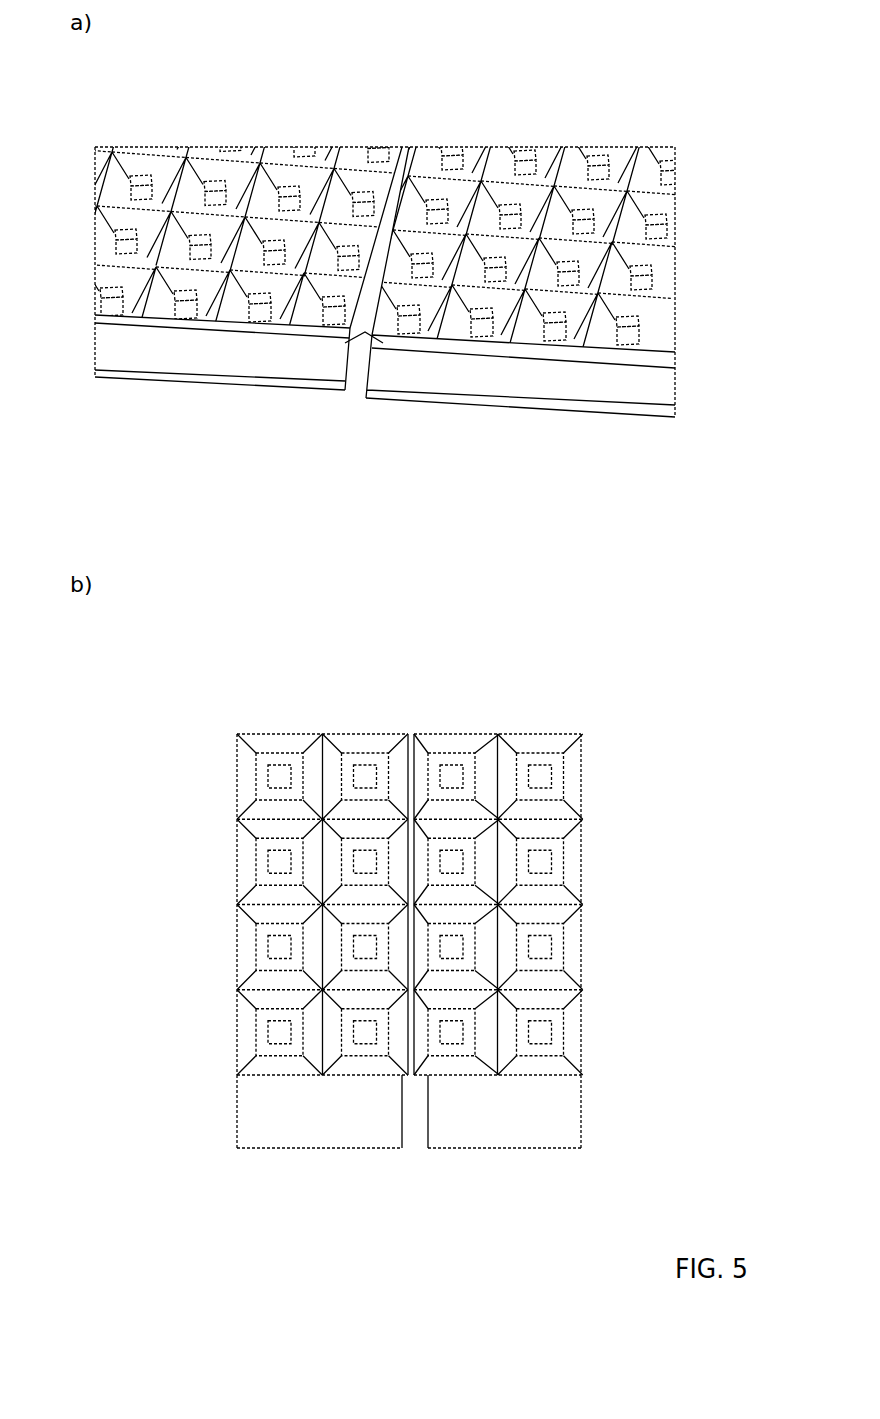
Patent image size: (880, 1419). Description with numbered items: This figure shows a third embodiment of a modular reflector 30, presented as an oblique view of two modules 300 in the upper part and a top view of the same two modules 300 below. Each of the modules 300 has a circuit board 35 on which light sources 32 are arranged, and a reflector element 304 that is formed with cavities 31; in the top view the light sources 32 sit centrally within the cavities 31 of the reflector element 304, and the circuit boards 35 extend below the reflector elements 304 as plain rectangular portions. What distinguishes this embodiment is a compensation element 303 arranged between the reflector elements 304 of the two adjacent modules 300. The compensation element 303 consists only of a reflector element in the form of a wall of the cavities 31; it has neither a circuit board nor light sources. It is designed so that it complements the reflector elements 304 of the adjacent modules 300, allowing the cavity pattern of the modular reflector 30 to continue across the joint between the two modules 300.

The modular reflector 30 is at (380, 108).
The cavities 31 is at (676, 266).
The light sources 32 is at (520, 158).
The compensation element 303 is at (358, 337).
The reflector element 304 is at (213, 152).
The circuit board 35 is at (176, 382).
The modules 300 is at (232, 393).